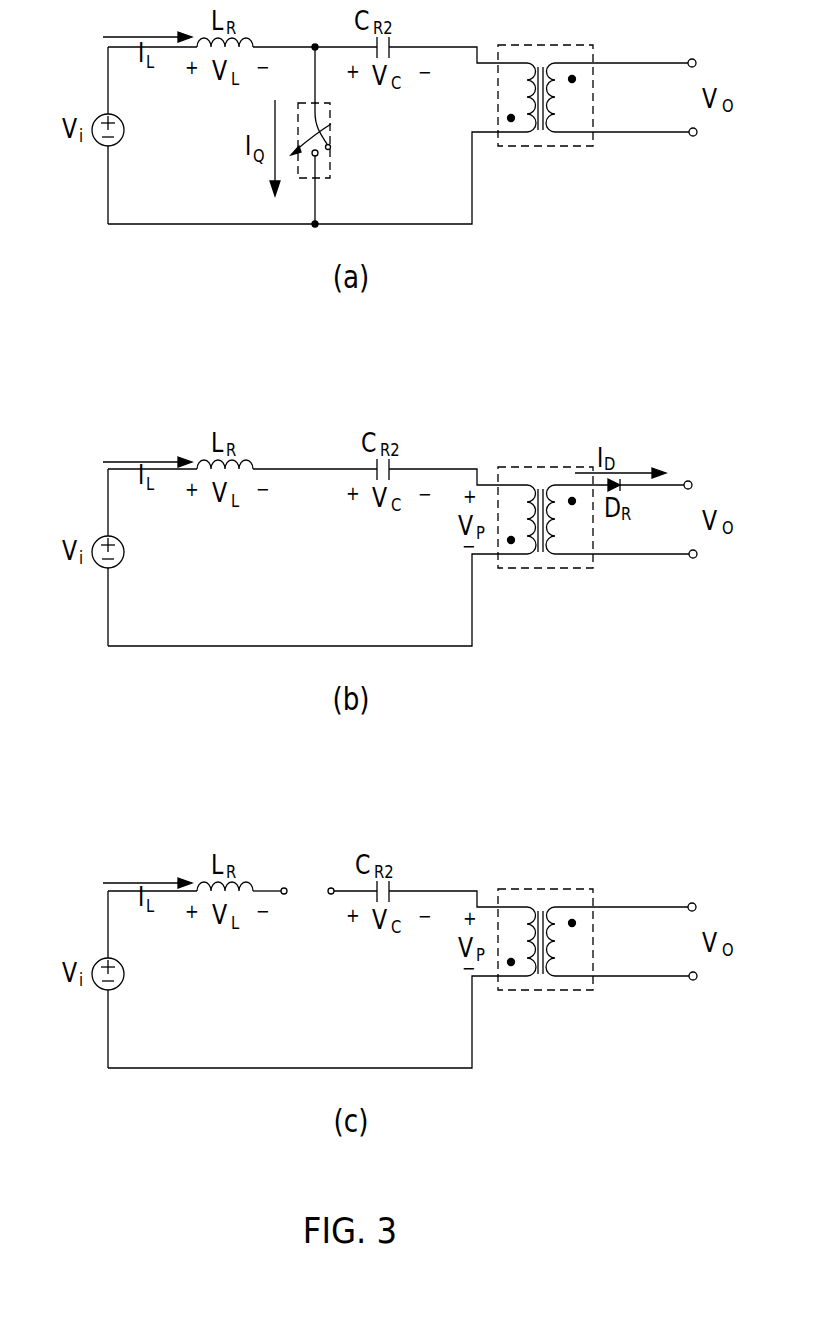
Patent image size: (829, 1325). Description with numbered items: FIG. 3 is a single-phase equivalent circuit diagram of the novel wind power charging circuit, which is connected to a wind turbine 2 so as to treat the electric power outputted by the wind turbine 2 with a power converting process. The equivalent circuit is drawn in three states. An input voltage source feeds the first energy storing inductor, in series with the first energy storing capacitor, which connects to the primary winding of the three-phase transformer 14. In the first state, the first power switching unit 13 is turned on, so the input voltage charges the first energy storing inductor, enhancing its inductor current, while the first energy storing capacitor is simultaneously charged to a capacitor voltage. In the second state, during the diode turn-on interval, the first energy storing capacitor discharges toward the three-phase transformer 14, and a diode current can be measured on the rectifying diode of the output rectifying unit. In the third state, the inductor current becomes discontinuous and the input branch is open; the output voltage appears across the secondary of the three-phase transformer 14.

The wind turbine 2 is at (383, 469).
The first power switching unit 13 is at (329, 164).
The three-phase transformer 14 is at (593, 146).